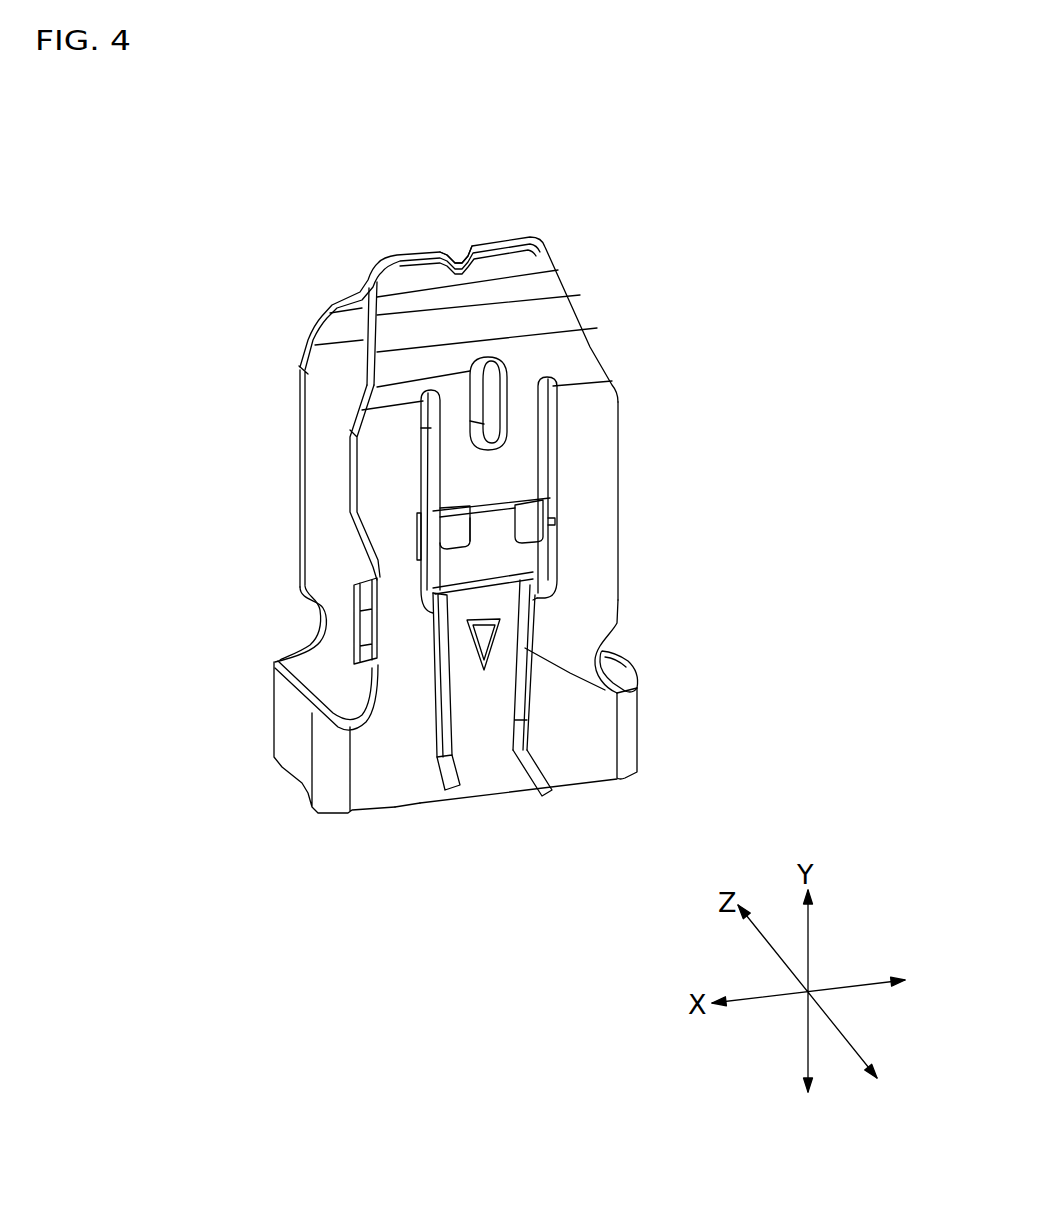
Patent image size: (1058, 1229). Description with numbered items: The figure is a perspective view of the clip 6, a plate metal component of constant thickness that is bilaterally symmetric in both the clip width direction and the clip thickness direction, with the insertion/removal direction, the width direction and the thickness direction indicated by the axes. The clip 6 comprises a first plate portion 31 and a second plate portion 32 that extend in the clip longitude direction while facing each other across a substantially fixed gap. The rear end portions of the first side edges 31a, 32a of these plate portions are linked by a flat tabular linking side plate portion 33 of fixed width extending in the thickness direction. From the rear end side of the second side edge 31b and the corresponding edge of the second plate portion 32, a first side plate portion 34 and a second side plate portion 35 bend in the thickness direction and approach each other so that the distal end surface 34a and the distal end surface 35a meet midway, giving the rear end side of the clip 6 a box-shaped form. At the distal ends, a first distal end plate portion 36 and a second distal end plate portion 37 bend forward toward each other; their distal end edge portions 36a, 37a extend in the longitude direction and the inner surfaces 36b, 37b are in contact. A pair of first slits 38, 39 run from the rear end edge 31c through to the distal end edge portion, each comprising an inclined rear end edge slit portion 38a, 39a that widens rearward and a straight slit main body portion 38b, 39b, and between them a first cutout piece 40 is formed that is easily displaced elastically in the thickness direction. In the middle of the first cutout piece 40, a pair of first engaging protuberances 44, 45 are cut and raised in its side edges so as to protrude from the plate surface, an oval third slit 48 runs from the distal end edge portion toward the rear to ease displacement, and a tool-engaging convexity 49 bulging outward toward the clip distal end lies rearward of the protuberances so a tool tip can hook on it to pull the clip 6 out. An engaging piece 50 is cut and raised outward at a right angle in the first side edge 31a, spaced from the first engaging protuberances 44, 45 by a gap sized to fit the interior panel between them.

The clip 6 is at (212, 286).
The first plate portion 31 is at (577, 751).
The first side edge 31a is at (350, 474).
The second side edge 31b is at (620, 448).
The rear end edge 31c is at (392, 808).
The second plate portion 32 is at (336, 418).
The first side edge 32a is at (298, 447).
The linking side plate portion 33 is at (284, 762).
The first side plate portion 34 is at (650, 680).
The distal end surface 34a is at (618, 694).
The second side plate portion 35 is at (622, 645).
The distal end surface 35a is at (620, 663).
The first distal end plate portion 36 is at (545, 318).
The distal end edge portion 36a is at (530, 268).
The surface 36b is at (506, 240).
The second distal end plate portion 37 is at (315, 310).
The distal end edge portion 37a is at (366, 272).
The surface 37b is at (412, 269).
The first slit 38 is at (436, 680).
The rear end edge slit portion 38a is at (443, 785).
The slit main body portion 38b is at (437, 707).
The first slit 39 is at (525, 648).
The rear end edge slit portion 39a is at (528, 740).
The slit main body portion 39b is at (528, 703).
The first cutout piece 40 is at (484, 720).
The first engaging protuberance 44 is at (443, 538).
The first engaging protuberance 45 is at (537, 527).
The third slit 48 is at (503, 407).
The tool-engaging convexity 49 is at (497, 633).
The engaging piece 50 is at (365, 633).